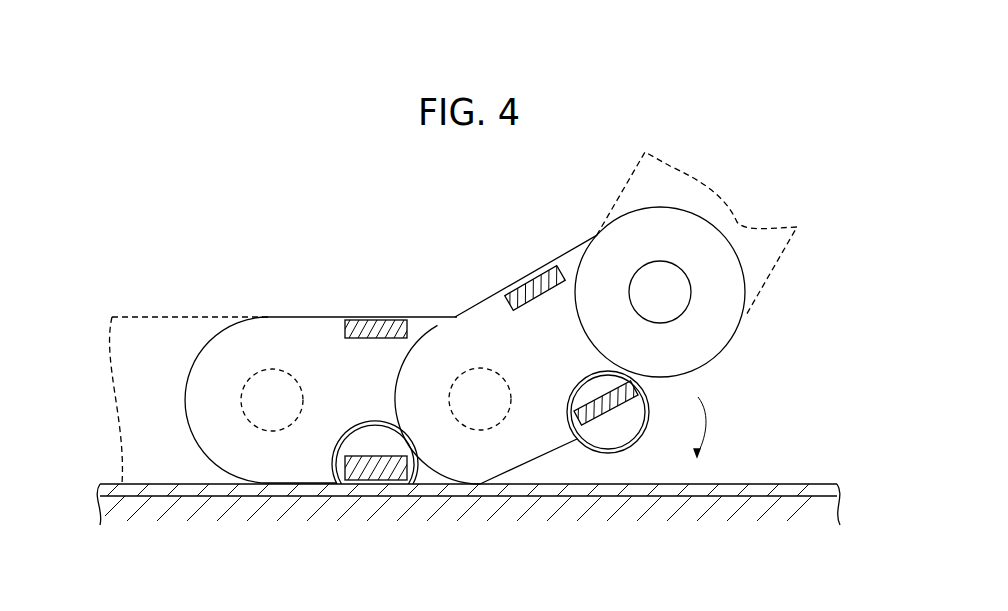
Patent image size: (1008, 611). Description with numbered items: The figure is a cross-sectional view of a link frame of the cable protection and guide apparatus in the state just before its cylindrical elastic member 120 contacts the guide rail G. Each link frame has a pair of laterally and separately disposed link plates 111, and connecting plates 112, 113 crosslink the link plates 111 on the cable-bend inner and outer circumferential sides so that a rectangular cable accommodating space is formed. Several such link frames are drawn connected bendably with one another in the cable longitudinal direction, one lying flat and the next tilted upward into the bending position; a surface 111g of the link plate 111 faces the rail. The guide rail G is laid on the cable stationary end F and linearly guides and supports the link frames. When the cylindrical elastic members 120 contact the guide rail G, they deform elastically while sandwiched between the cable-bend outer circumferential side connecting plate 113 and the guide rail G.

The link plate 111 is at (277, 330).
The bottom surface of link 111g is at (557, 460).
The connecting plate 112 is at (377, 318).
The cable-bend outer circumferential side connecting plate 113 is at (357, 498).
The cylindrical elastic member 120 is at (425, 498).
The guide rail G is at (813, 484).
The cable stationary end F is at (829, 551).